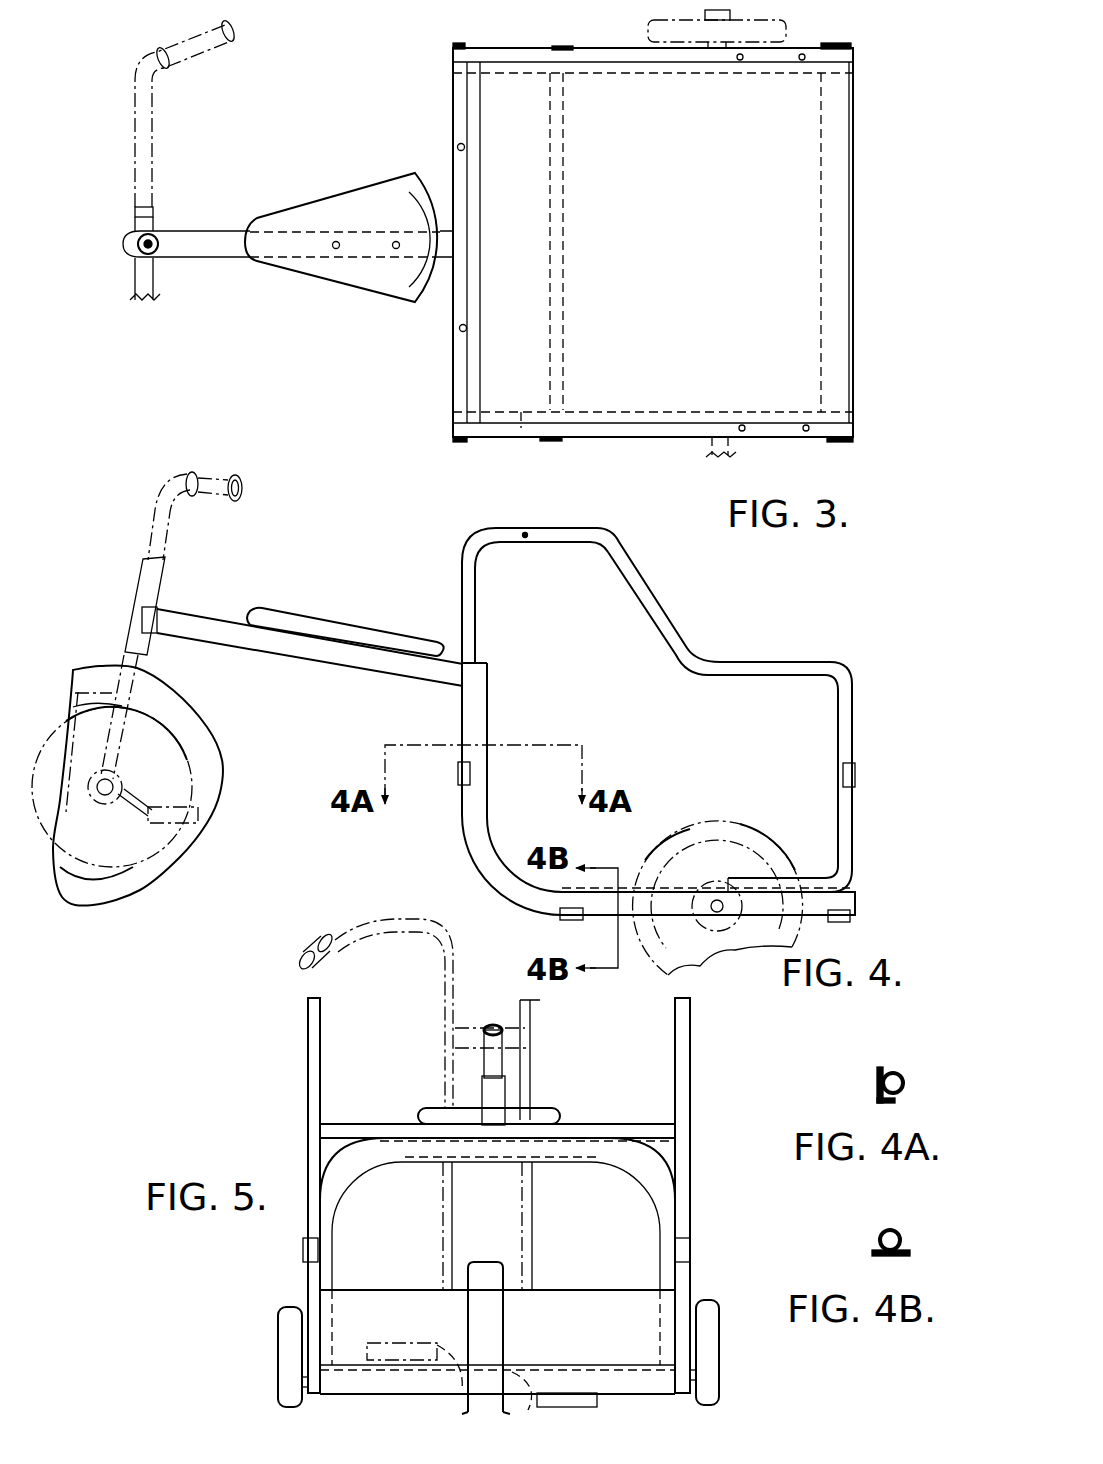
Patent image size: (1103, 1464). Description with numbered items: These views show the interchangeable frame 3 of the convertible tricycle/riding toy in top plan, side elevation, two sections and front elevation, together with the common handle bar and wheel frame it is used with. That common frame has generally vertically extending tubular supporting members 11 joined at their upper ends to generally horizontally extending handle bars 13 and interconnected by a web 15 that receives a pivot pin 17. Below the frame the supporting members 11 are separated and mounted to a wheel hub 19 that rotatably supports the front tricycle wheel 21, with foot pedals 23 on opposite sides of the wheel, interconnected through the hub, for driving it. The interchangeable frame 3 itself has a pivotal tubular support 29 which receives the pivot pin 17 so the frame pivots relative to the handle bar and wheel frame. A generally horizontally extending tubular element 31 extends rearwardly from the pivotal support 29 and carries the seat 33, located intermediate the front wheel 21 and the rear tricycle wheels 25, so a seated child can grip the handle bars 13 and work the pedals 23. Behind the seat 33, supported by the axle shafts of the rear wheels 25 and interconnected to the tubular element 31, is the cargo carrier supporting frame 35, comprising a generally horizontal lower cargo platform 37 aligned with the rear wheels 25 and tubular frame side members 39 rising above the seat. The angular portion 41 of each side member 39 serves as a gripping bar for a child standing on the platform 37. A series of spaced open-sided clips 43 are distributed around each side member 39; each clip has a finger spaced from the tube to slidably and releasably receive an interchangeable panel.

In FIG. 3, the interchangeable frame 3 is at (876, 46).
In FIG. 4, the interchangeable frame 3 is at (829, 640).
In FIG. 5, the interchangeable frame 3 is at (740, 1134).
In FIG. 4, the vertically extending tubular supporting members 11 is at (150, 545).
In FIG. 5, the vertically extending tubular supporting members 11 is at (445, 1055).
In FIG. 3, the handle bars 13 is at (211, 54).
In FIG. 4, the handle bars 13 is at (240, 505).
In FIG. 5, the handle bars 13 is at (303, 950).
In FIG. 3, the web 15 is at (158, 212).
In FIG. 5, the web 15 is at (525, 1092).
In FIG. 3, the pivot pin 17 is at (157, 254).
In FIG. 4, the pivot pin 17 is at (158, 560).
In FIG. 5, the pivot pin 17 is at (496, 1026).
In FIG. 4, the wheel hub 19 is at (112, 781).
In FIG. 4, the front tricycle wheel 21 is at (207, 806).
In FIG. 5, the front tricycle wheel 21 is at (505, 1278).
In FIG. 4, the foot pedals 23 is at (187, 820).
In FIG. 5, the foot pedals 23 is at (413, 1343).
In FIG. 4, the rear tricycle wheels 25 is at (725, 945).
In FIG. 5, the rear tricycle wheels 25 is at (280, 1328).
In FIG. 3, the pivotal tubular support 29 is at (160, 238).
In FIG. 4, the pivotal tubular support 29 is at (155, 650).
In FIG. 3, the horizontally extending tubular element 31 is at (224, 246).
In FIG. 4, the horizontally extending tubular element 31 is at (347, 656).
In FIG. 3, the seat 33 is at (376, 214).
In FIG. 4, the seat 33 is at (377, 622).
In FIG. 5, the seat 33 is at (562, 1117).
In FIG. 3, the cargo carrier supporting frame 35 is at (856, 296).
In FIG. 4, the cargo carrier supporting frame 35 is at (535, 772).
In FIG. 5, the cargo carrier supporting frame 35 is at (518, 1181).
In FIG. 3, the lower cargo platform 37 is at (801, 182).
In FIG. 4, the lower cargo platform 37 is at (648, 890).
In FIG. 5, the lower cargo platform 37 is at (600, 1380).
In FIG. 3, the tubular frame side members 39 is at (636, 55).
In FIG. 4, the tubular frame side members 39 is at (716, 664).
In FIG. 5, the tubular frame side members 39 is at (318, 1086).
In FIG. 3, the angular portion 41 is at (540, 53).
In FIG. 4, the angular portion 41 is at (668, 603).
In FIG. 4, the open-sided clips 43 is at (858, 772).
In FIG. 4A, the open-sided clips 43 is at (890, 1105).
In FIG. 4B, the open-sided clips 43 is at (912, 1250).